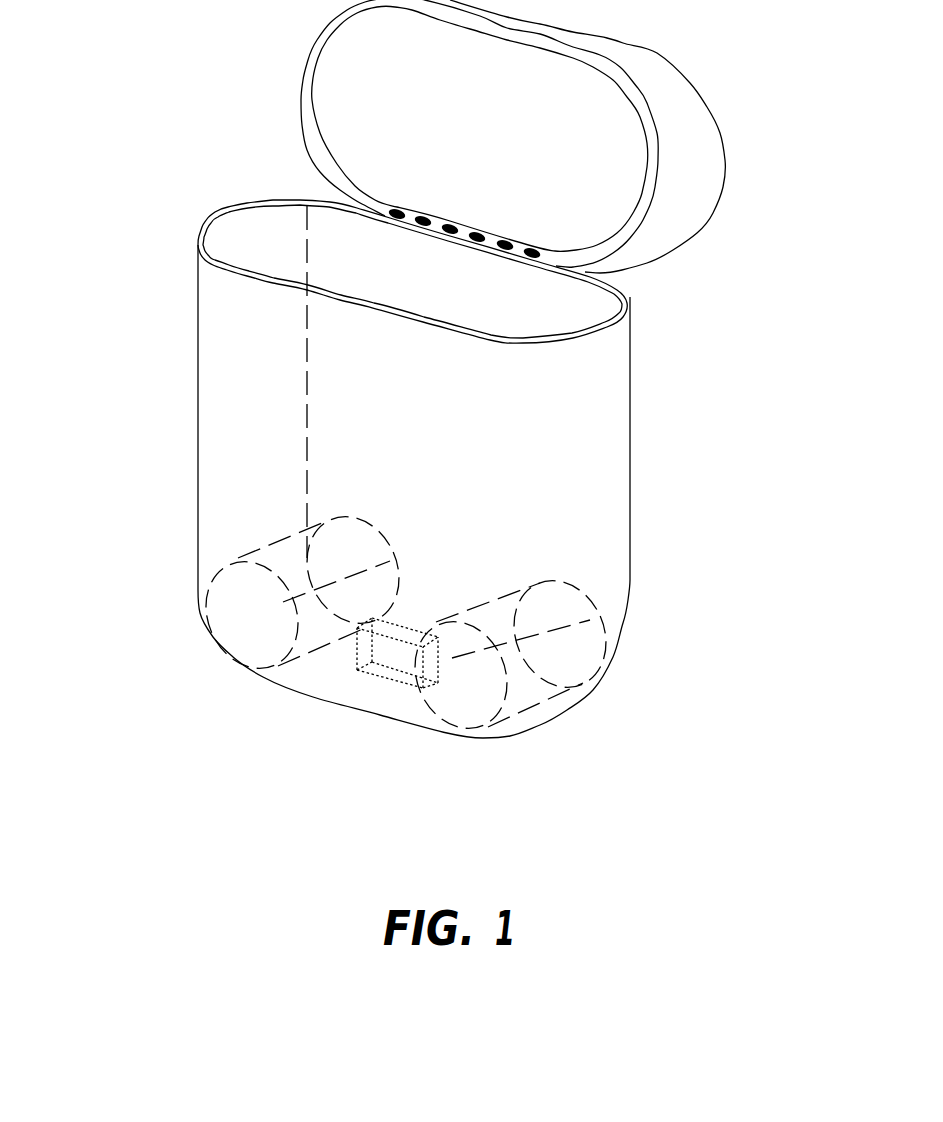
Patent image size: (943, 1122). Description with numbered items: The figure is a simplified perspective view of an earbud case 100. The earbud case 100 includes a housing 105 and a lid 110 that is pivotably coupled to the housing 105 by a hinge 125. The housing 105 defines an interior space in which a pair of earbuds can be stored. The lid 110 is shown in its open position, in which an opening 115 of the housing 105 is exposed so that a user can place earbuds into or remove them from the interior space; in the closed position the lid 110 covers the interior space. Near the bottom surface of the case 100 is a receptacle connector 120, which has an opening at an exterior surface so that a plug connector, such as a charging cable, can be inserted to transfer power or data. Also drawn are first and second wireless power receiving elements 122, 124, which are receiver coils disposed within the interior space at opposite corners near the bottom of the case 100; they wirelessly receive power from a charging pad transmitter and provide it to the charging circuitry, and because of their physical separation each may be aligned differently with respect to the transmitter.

The earbud case 100 is at (181, 107).
The housing 105 is at (633, 402).
The lid 110 is at (720, 112).
The opening 115 is at (423, 287).
The receptacle connector 120 is at (403, 632).
The first wireless power receiving element 122 is at (250, 552).
The second wireless power receiving element 124 is at (585, 604).
The hinge 125 is at (453, 223).